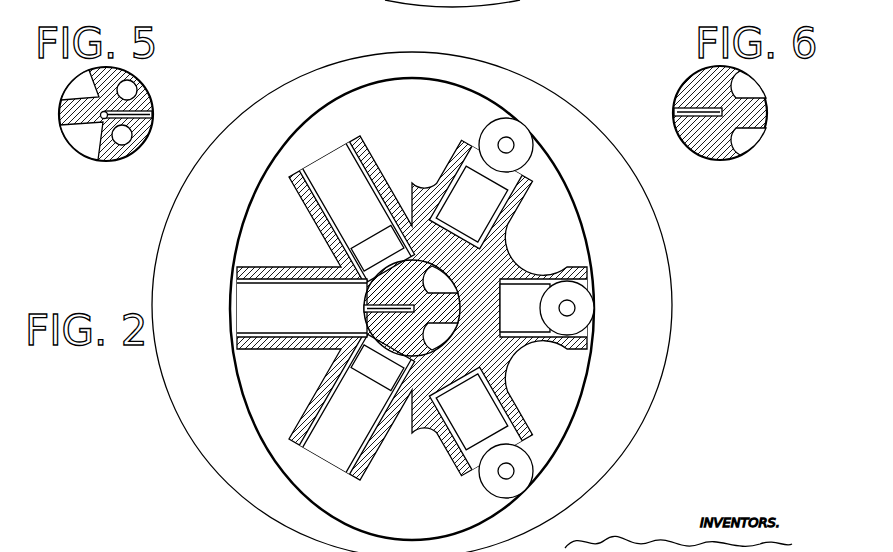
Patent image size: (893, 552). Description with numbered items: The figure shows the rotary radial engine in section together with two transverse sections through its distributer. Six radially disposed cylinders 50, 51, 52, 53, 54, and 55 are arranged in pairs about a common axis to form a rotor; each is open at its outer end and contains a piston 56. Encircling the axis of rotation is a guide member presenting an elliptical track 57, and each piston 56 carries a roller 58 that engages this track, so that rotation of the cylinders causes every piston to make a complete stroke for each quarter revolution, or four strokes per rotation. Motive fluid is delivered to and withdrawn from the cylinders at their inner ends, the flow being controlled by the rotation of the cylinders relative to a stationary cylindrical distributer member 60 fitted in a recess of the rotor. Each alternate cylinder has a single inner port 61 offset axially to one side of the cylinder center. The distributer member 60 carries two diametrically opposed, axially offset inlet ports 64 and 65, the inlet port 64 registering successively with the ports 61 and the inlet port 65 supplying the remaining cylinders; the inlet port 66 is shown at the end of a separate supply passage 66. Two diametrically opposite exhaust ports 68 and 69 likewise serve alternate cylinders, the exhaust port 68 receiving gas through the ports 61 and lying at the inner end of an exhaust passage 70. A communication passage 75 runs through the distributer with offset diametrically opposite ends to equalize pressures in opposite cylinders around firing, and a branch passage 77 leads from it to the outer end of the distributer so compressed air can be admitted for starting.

In FIG. 2, the cylinder 50 is at (372, 162).
In FIG. 2, the cylinder 51 is at (520, 212).
In FIG. 2, the cylinder 52 is at (535, 352).
In FIG. 2, the cylinder 53 is at (460, 473).
In FIG. 2, the cylinder 54 is at (300, 428).
In FIG. 2, the cylinder 55 is at (288, 280).
In FIG. 2, the piston 56 is at (482, 183).
In FIG. 2, the elliptical track 57 is at (475, 93).
In FIG. 2, the roller 58 is at (485, 139).
In FIG. 2, the distributer member 60 is at (378, 325).
In FIG. 5, the distributer member 60 is at (73, 120).
In FIG. 6, the distributer member 60 is at (657, 92).
In FIG. 2, the cylinder port 61 is at (387, 260).
In FIG. 2, the inlet port 64 is at (438, 336).
In FIG. 6, the inlet port 64 is at (740, 147).
In FIG. 5, the inlet port 65 is at (82, 88).
In FIG. 5, the supply passage 66 is at (135, 143).
In FIG. 2, the exhaust port 68 is at (440, 273).
In FIG. 6, the exhaust port 68 is at (755, 92).
In FIG. 5, the exhaust port 69 is at (83, 147).
In FIG. 5, the exhaust passage 70 is at (127, 92).
In FIG. 5, the communication passage 75 is at (150, 115).
In FIG. 6, the communication passage 75 is at (675, 120).
In FIG. 5, the branch passage 77 is at (107, 118).